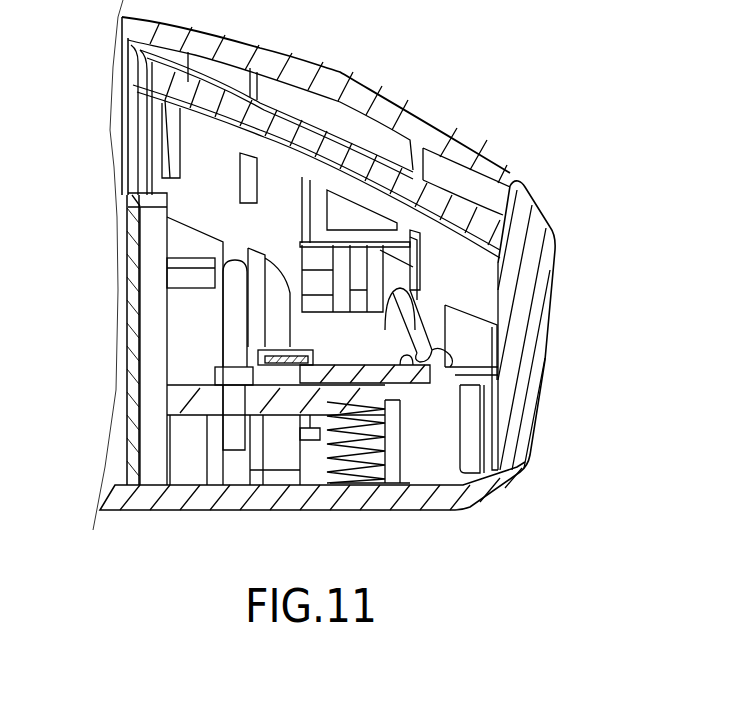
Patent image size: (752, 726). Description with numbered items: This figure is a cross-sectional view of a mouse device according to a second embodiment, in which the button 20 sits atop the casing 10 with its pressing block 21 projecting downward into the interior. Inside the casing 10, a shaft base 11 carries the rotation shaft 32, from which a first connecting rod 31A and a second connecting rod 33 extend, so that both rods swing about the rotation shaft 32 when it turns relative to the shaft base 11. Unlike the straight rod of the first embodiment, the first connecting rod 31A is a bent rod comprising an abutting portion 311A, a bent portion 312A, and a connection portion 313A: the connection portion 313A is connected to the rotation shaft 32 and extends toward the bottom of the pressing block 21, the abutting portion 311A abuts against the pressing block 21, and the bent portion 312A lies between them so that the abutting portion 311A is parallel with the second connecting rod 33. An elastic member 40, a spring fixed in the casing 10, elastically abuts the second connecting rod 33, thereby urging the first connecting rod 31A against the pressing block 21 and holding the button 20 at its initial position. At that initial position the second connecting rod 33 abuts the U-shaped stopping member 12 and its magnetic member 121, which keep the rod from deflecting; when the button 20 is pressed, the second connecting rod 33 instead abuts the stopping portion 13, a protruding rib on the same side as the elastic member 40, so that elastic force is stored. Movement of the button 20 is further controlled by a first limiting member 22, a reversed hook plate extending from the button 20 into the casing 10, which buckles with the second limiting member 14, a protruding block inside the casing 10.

The button 20 is at (383, 97).
The pressing block 21 is at (340, 268).
The second limiting member 14 is at (178, 245).
The first limiting member 22 is at (180, 280).
The stopping member 12 is at (258, 328).
The magnetic member 121 is at (262, 358).
The stopping portion 13 is at (215, 378).
The abutting portion 311A is at (366, 290).
The bent portion 312A is at (392, 294).
The first connecting rod 31A is at (424, 308).
The connection portion 313A is at (448, 338).
The rotation shaft 32 is at (440, 362).
The casing 10 is at (518, 402).
The shaft base 11 is at (430, 432).
The second connecting rod 33 is at (314, 432).
The elastic member 40 is at (340, 487).